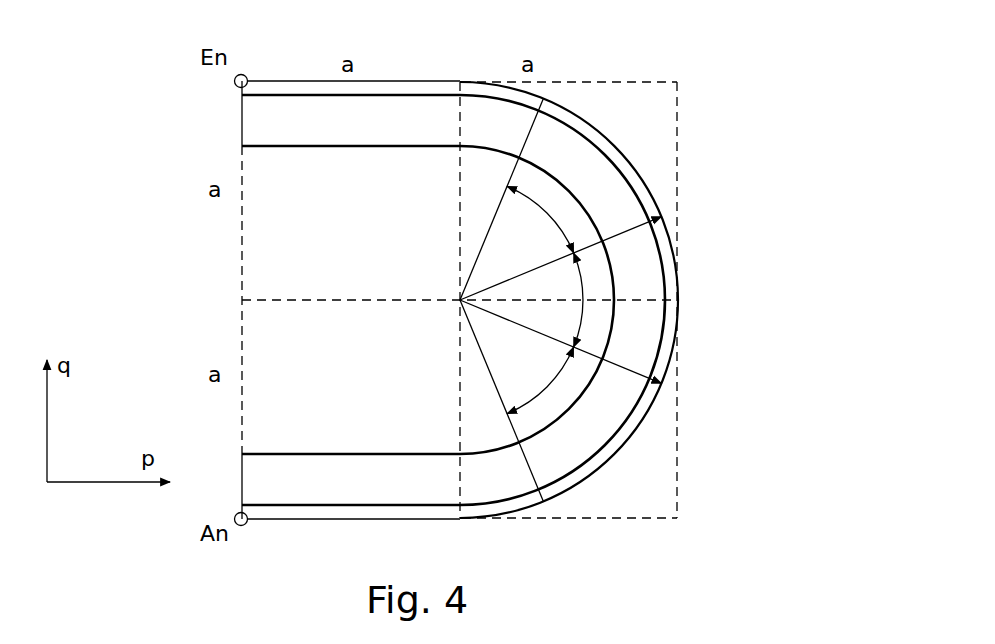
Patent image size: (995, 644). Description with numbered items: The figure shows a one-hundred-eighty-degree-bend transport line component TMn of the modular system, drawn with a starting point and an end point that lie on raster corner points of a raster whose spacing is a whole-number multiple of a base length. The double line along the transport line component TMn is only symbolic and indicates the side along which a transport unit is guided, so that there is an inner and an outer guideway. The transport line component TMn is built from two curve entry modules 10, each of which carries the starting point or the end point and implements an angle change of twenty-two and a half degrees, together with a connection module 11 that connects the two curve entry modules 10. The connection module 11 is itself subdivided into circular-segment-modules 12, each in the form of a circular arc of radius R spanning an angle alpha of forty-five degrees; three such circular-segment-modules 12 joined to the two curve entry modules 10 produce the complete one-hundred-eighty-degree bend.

The curve entry module 10 is at (308, 125).
The connection module 11 is at (675, 250).
The circular-segment-module 12 is at (608, 188).
The transport line component TMn is at (592, 177).